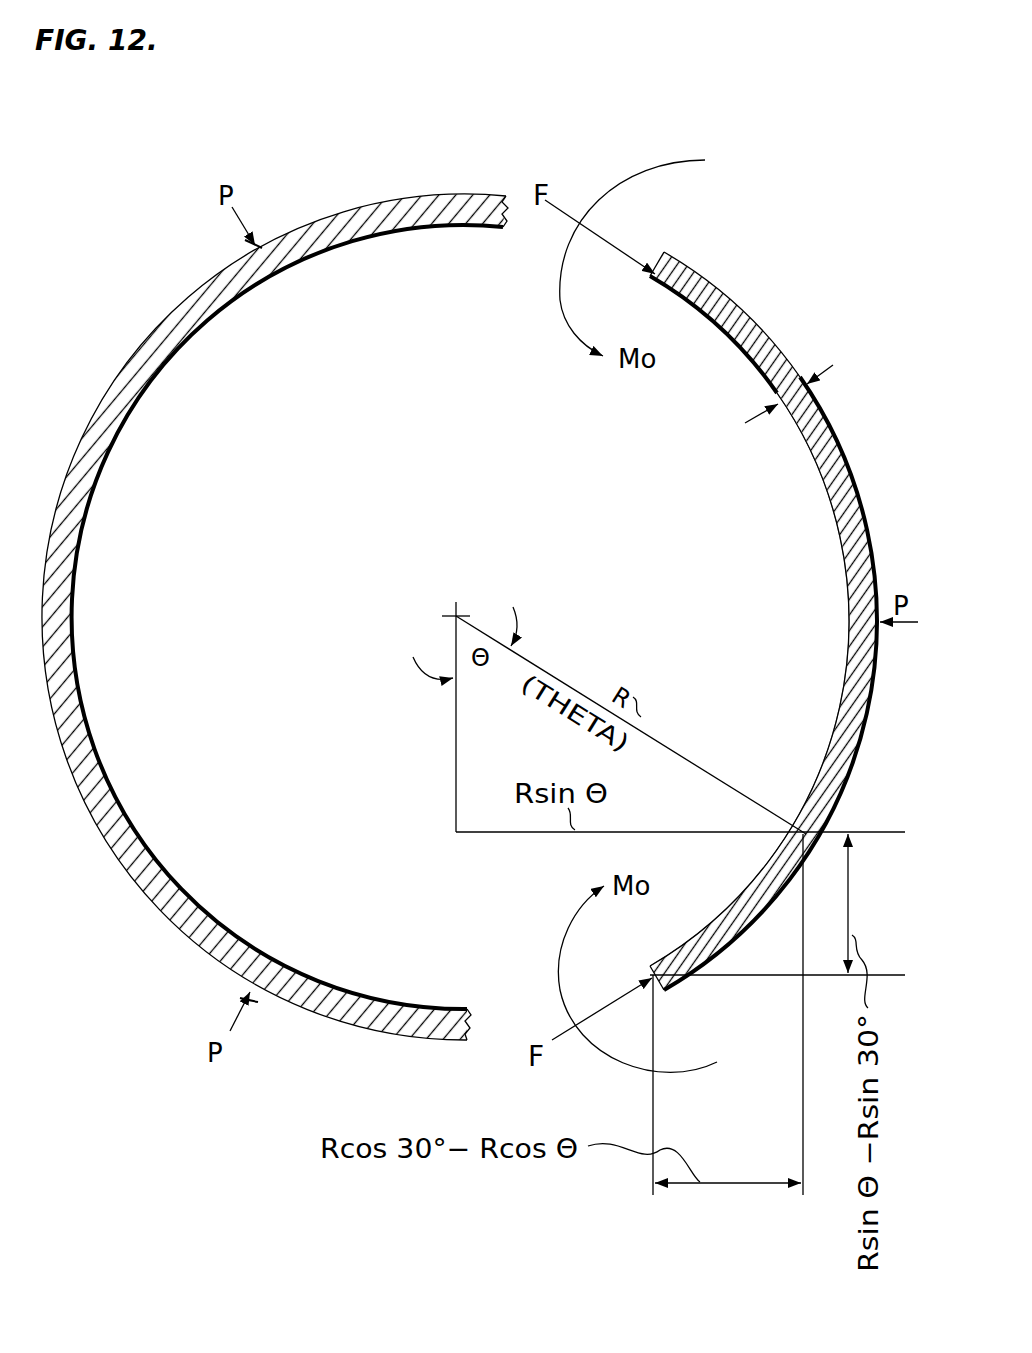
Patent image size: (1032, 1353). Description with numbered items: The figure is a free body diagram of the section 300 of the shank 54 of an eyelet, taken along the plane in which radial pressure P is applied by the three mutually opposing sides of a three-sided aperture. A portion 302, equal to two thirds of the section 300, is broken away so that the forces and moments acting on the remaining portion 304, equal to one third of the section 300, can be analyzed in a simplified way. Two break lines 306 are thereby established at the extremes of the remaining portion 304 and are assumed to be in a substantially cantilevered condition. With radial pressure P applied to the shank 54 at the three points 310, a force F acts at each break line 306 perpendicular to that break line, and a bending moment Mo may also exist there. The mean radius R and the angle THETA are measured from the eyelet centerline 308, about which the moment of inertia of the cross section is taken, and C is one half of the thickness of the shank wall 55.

The section of the shank 300 is at (97, 206).
The portion 302 is at (75, 690).
The remaining portion 304 is at (898, 760).
The break lines 306 is at (656, 273).
The eyelet centerline 308 is at (453, 612).
The points 310 is at (262, 242).
The shank 54 is at (760, 328).
The shank wall 55 is at (770, 413).